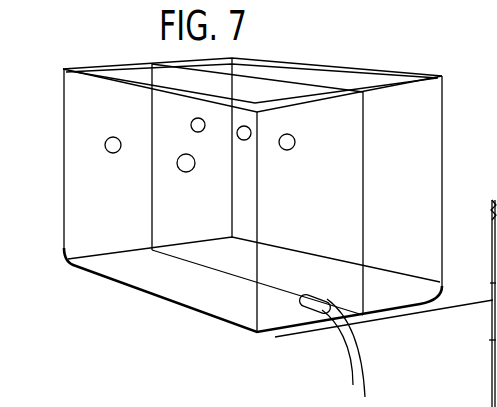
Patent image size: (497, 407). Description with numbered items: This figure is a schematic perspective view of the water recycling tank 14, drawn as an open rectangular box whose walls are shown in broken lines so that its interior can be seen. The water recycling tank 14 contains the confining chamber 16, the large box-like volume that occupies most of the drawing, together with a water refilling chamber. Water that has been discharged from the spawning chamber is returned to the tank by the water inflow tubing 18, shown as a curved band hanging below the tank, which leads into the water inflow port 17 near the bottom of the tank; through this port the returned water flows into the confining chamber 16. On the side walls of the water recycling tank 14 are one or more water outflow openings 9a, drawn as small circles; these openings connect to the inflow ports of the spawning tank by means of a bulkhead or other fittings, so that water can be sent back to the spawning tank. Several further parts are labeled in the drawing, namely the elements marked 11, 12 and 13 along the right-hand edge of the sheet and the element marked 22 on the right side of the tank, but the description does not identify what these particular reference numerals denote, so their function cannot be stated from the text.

The water outflow openings 9a is at (105, 145).
The support bar 11 is at (492, 229).
The bracket 12 is at (492, 285).
The fastener 13 is at (493, 340).
The water recycling tank 14 is at (410, 320).
The confining chamber 16 is at (88, 97).
The water inflow port 17 is at (300, 298).
The water inflow tubing 18 is at (356, 361).
The opening 22 is at (296, 142).